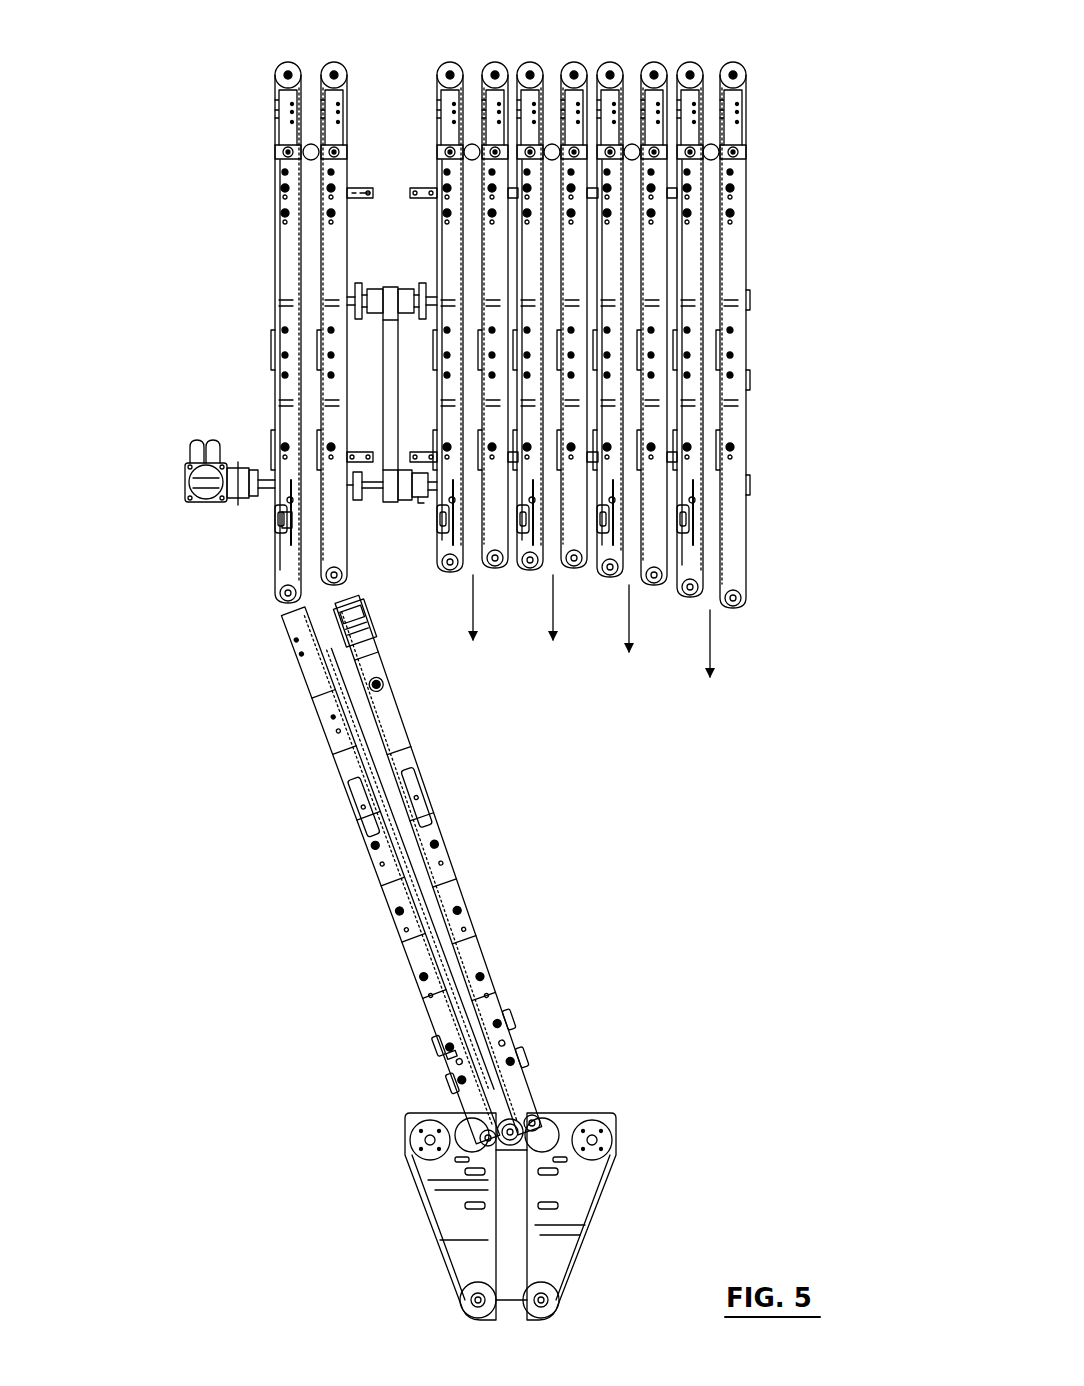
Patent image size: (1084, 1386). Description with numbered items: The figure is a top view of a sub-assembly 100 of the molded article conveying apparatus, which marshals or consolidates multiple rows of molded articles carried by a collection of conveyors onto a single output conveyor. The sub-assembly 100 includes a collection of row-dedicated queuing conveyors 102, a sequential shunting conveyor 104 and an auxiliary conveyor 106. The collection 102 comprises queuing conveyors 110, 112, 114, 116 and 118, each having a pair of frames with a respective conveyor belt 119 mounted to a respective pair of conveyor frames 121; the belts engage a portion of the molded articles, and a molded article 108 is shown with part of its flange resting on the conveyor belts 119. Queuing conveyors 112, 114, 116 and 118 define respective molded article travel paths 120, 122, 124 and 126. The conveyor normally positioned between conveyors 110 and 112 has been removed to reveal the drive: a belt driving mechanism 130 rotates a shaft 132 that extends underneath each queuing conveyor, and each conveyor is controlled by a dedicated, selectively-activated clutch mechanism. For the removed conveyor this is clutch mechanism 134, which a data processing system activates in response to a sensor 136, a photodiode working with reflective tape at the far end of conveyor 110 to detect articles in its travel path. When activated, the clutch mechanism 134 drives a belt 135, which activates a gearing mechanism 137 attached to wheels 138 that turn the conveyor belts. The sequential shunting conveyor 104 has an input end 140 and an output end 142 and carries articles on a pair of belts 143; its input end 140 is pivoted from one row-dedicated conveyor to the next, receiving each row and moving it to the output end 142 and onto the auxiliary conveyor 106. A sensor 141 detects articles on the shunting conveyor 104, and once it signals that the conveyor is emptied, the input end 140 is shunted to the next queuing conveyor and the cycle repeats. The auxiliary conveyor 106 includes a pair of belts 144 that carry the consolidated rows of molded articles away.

The sub-assembly 100 is at (312, 1208).
The collection of row-dedicated queuing conveyors 102 is at (759, 70).
The sequential shunting conveyor 104 is at (406, 1182).
The auxiliary conveyor 106 is at (628, 1113).
The molded article 108 is at (308, 160).
The queuing conveyor 110 is at (346, 56).
The queuing conveyor 112 is at (508, 56).
The queuing conveyor 114 is at (588, 56).
The queuing conveyor 116 is at (667, 56).
The queuing conveyor 118 is at (747, 56).
The conveyor belt 119 is at (325, 243).
The molded article travel path 120 is at (475, 638).
The conveyor frame 121 is at (325, 118).
The molded article travel path 122 is at (555, 640).
The molded article travel path 124 is at (630, 652).
The molded article travel path 126 is at (712, 675).
The belt driving mechanism 130 is at (195, 503).
The shaft 132 is at (268, 503).
The clutch mechanism 134 is at (407, 508).
The belt 135 is at (385, 385).
The sensor 136 is at (286, 543).
The gearing mechanism 137 is at (368, 318).
The wheels 138 is at (426, 288).
The input end 140 is at (296, 630).
The sensor 141 is at (368, 645).
The output end 142 is at (530, 1085).
The pair of belts 143 is at (468, 965).
The pair of belts 144 is at (500, 1220).